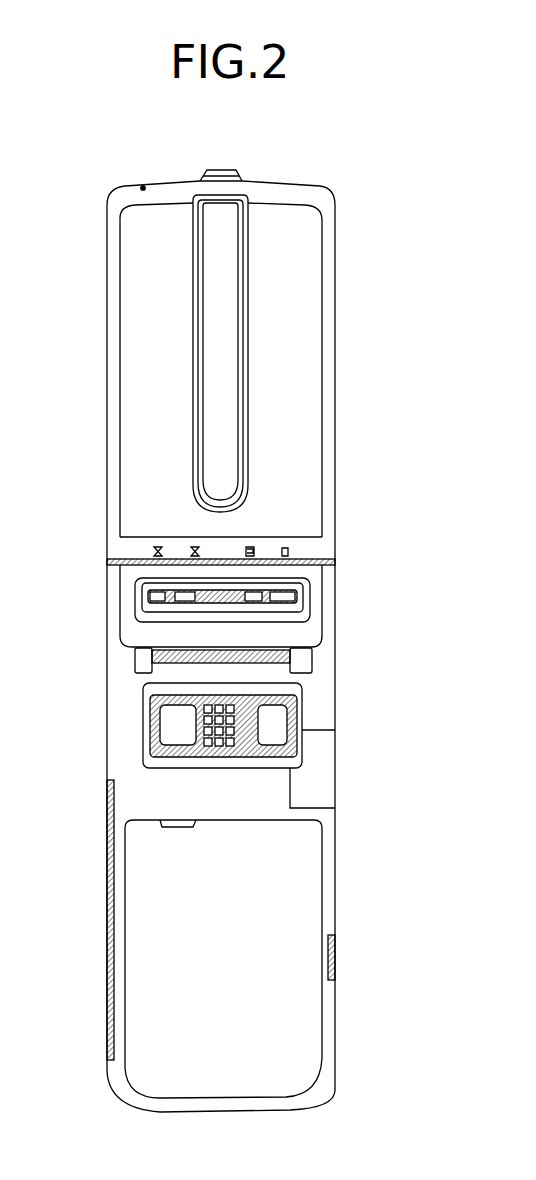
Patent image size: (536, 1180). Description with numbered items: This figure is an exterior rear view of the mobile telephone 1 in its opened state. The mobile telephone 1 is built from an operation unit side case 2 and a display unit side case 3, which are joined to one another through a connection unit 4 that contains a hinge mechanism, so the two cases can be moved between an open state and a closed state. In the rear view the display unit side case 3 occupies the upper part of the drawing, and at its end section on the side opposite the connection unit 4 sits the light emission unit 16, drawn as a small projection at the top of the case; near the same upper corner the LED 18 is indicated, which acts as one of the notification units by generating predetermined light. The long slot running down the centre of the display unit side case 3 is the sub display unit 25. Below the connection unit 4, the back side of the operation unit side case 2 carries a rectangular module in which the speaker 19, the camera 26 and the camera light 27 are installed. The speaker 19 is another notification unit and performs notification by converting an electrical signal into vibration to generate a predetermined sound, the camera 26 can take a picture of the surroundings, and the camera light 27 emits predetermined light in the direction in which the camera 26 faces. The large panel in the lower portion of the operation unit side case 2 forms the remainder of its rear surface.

The mobile telephone 1 is at (352, 202).
The operation unit side case 2 is at (356, 881).
The display unit side case 3 is at (93, 358).
The connection unit 4 is at (101, 598).
The light emission unit 16 is at (225, 162).
The LED 18 is at (145, 185).
The speaker 19 is at (237, 716).
The sub display unit 25 is at (247, 332).
The camera 26 is at (158, 712).
The camera light 27 is at (288, 715).